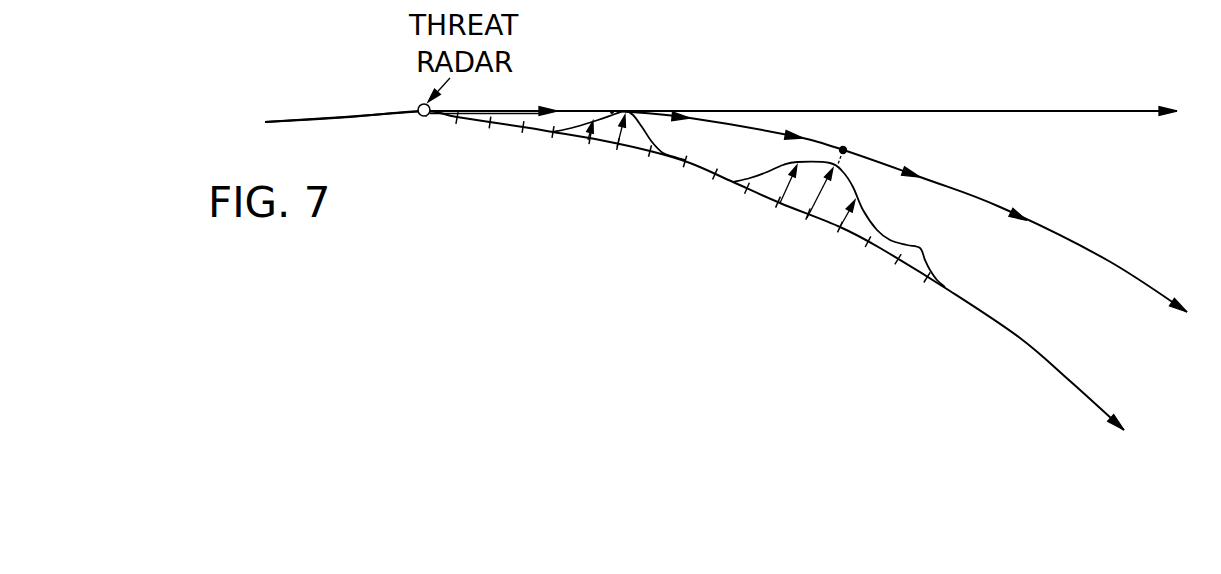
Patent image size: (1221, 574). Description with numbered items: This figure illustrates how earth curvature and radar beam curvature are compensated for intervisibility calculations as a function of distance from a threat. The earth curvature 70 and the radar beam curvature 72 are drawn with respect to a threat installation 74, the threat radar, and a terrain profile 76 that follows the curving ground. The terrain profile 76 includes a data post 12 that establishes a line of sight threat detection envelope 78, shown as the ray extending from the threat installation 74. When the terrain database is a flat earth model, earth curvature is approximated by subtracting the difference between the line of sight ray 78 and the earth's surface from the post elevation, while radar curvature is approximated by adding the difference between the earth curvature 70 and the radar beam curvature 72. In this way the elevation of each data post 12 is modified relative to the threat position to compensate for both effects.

The data post 12 is at (628, 109).
The earth curvature 70 is at (982, 308).
The radar beam curvature 72 is at (1054, 231).
The threat installation 74 is at (420, 107).
The terrain profile 76 is at (600, 97).
The line of sight threat detection envelope 78 is at (813, 110).